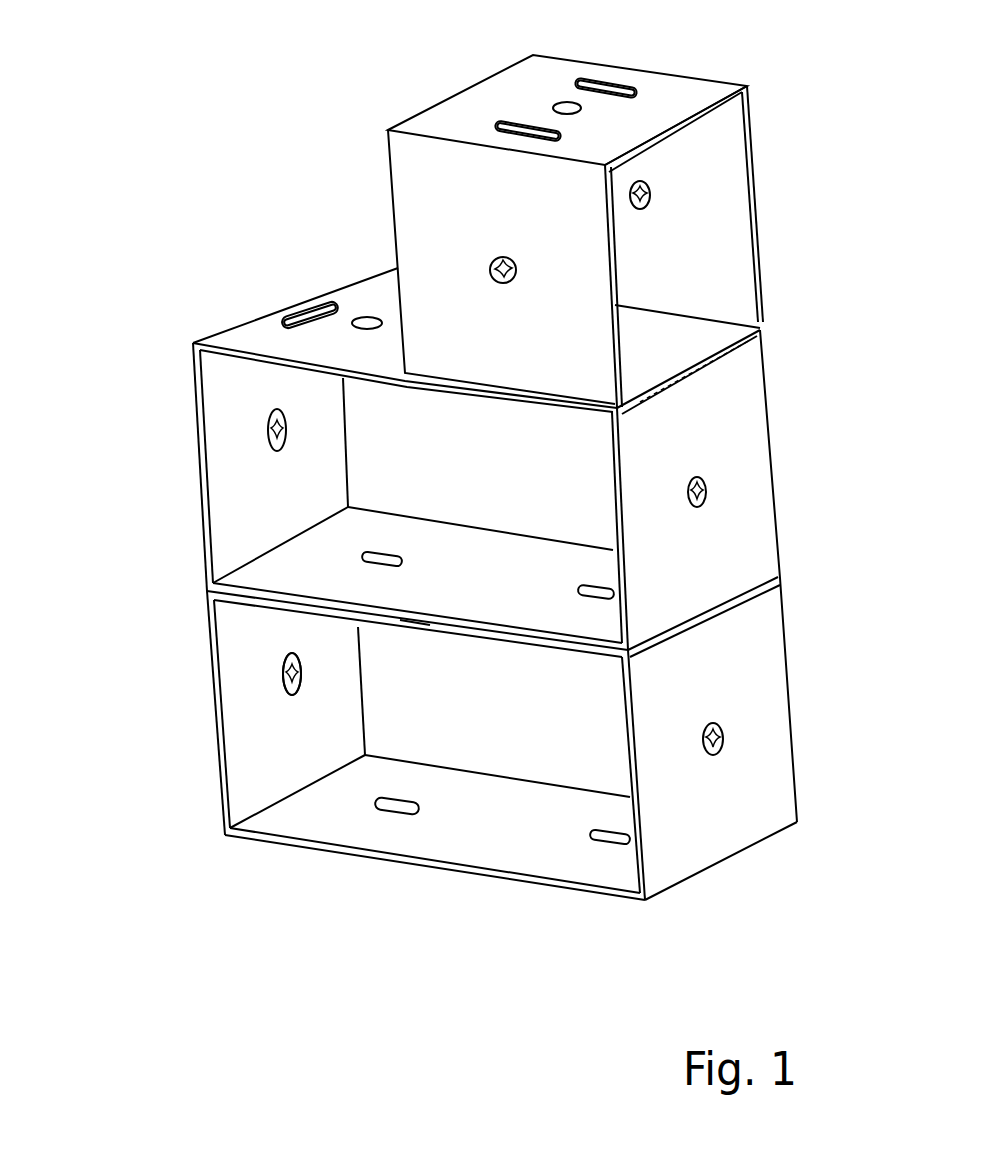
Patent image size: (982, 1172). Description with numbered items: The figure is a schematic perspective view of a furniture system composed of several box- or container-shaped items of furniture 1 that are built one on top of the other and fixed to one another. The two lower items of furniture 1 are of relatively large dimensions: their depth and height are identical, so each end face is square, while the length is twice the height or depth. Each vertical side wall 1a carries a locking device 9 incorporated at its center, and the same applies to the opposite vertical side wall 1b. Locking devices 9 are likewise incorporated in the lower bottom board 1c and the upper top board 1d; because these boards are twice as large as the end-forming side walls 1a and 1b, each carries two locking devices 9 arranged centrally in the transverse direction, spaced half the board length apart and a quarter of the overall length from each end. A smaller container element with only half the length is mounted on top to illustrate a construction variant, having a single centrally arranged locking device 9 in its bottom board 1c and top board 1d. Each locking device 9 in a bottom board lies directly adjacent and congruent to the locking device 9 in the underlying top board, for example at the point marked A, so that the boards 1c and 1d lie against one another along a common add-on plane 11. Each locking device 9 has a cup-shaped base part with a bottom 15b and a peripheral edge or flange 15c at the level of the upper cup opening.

The item of furniture 1 is at (356, 172).
The vertical side wall 1a is at (743, 542).
The opposite vertical side wall 1b is at (237, 507).
The bottom board 1c is at (693, 343).
The top board 1d is at (685, 95).
The locking device 9 is at (665, 189).
The add-on plane 11 is at (417, 623).
The bottom 15b is at (517, 270).
The peripheral edge or flange 15c is at (290, 690).
The point of interaction A is at (353, 560).